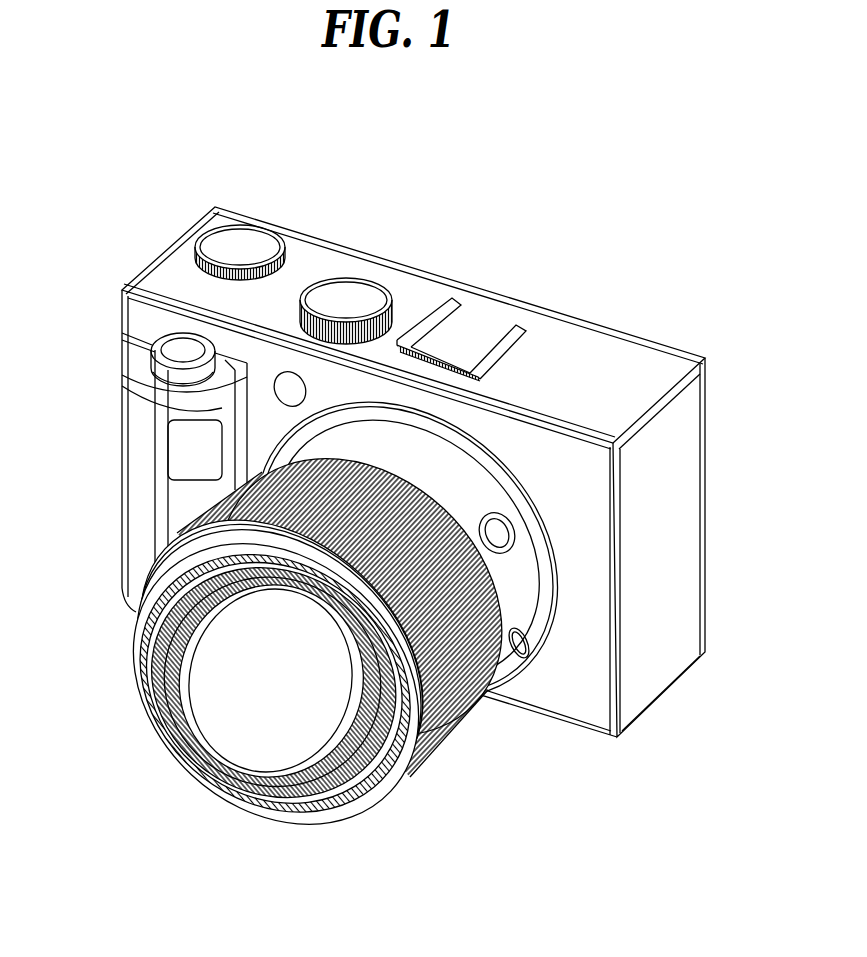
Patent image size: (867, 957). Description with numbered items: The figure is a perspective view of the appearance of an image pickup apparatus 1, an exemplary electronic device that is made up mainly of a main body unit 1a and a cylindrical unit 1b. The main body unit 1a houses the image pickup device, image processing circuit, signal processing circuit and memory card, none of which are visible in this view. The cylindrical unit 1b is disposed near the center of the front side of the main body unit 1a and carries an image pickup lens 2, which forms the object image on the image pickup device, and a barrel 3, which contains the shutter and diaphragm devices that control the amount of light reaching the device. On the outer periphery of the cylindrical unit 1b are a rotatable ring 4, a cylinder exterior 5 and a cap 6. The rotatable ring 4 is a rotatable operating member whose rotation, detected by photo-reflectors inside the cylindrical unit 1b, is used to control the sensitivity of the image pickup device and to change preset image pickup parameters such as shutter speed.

The image pickup apparatus 1 is at (401, 182).
The main body unit 1a is at (600, 305).
The cylindrical unit 1b is at (369, 625).
The image pickup lens 2 is at (238, 658).
The barrel 3 is at (157, 625).
The rotatable ring 4 is at (453, 737).
The cylinder exterior 5 is at (518, 588).
The cap 6 is at (387, 763).